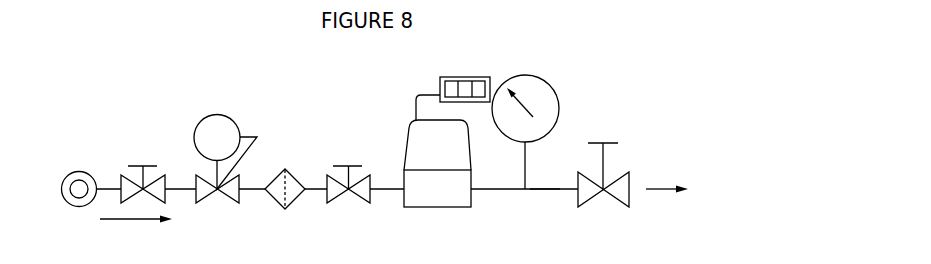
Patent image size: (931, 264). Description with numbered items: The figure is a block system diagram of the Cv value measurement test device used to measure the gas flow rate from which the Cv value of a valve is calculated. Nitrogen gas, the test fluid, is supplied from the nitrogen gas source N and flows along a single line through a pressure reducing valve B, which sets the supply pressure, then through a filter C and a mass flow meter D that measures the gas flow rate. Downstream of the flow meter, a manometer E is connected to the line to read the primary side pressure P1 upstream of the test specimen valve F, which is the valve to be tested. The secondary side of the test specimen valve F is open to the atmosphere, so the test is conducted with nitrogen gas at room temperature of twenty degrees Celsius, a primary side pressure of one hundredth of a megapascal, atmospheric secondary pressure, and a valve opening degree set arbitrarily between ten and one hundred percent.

The nitrogen gas source N is at (80, 171).
The pressure reducing valve B is at (213, 196).
The filter C is at (293, 201).
The mass flow meter D is at (435, 207).
The manometer E is at (559, 92).
The primary side pressure P1 is at (543, 190).
The test specimen valve F is at (593, 195).